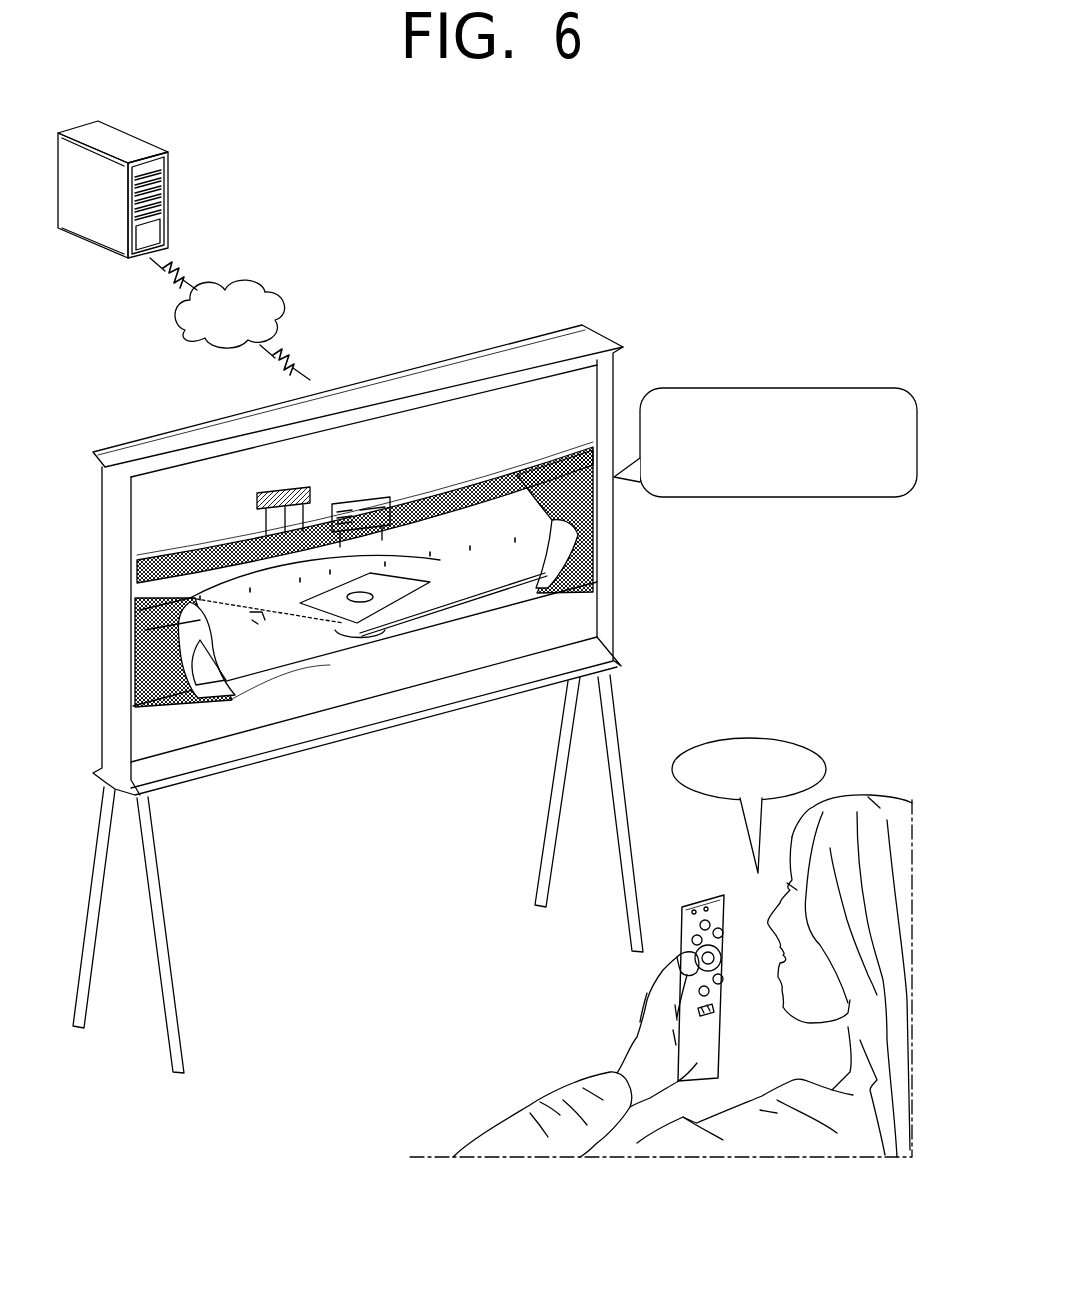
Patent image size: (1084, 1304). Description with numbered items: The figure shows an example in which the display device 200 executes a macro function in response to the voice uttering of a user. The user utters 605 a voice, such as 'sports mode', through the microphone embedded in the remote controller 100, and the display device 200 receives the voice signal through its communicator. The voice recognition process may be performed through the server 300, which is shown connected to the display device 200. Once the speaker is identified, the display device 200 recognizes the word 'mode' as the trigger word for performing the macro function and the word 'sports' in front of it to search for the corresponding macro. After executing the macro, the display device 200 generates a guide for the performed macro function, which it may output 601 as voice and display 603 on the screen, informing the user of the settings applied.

The server 300 is at (152, 147).
The display device 200 is at (380, 679).
The remote controller 100 is at (702, 888).
The guide output as voice 601 is at (789, 388).
The guide displayed on the screen 603 is at (583, 614).
The voice uttering of the user 605 is at (782, 740).